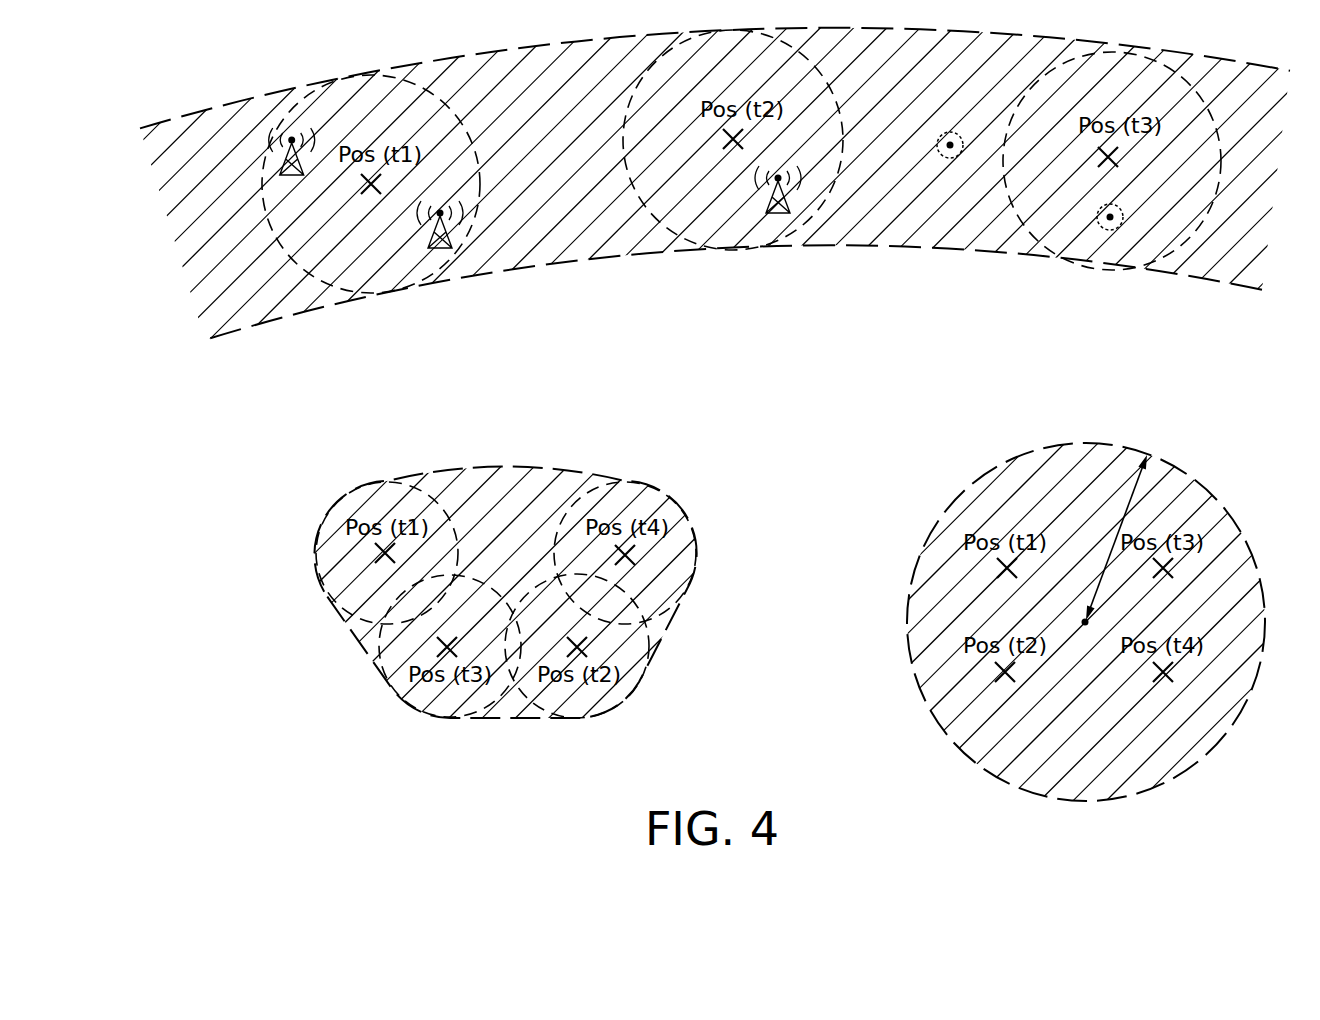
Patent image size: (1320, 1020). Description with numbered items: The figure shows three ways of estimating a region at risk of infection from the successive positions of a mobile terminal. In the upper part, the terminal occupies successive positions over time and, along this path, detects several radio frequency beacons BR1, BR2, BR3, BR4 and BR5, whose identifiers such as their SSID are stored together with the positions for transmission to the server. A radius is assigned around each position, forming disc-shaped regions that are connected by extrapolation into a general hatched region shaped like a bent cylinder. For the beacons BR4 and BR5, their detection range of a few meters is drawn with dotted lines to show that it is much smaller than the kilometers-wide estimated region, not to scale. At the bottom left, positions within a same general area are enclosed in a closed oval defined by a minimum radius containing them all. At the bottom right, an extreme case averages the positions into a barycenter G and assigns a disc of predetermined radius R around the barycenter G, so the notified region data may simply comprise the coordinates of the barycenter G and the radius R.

The radio frequency beacon BR1 is at (282, 163).
The radio frequency beacon BR2 is at (432, 241).
The radio frequency beacon BR3 is at (770, 206).
The radio frequency beacon BR4 is at (945, 131).
The radio frequency beacon BR5 is at (1123, 211).
The barycenter G is at (1075, 607).
The predetermined radius R is at (1116, 537).